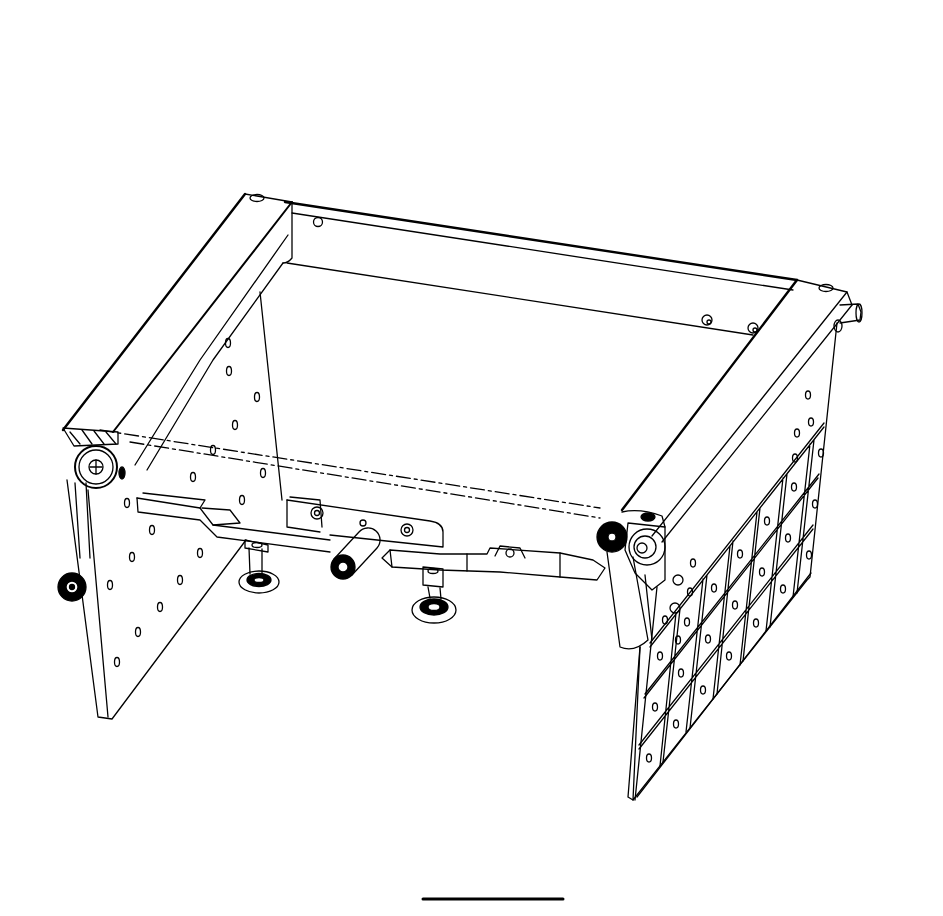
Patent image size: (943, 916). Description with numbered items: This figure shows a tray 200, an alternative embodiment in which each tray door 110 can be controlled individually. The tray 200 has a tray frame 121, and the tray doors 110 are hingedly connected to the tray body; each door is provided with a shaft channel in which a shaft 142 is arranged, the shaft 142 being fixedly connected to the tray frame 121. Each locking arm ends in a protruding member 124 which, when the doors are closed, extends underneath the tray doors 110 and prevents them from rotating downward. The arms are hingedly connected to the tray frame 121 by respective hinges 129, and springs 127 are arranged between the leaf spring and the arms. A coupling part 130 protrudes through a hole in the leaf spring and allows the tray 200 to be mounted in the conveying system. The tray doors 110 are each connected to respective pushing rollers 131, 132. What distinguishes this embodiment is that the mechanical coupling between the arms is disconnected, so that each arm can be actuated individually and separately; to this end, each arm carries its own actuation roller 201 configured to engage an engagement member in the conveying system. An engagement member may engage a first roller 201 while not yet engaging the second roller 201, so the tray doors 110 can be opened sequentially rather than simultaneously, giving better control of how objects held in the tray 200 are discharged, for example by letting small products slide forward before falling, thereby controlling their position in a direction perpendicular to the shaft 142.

The tray 200 is at (133, 152).
The tray frame 121 is at (457, 263).
The shaft 142 is at (90, 467).
The protruding member 124 is at (140, 495).
The hinge 129 is at (217, 508).
The spring 127 is at (405, 545).
The pushing roller 131 is at (603, 533).
The pushing roller 132 is at (65, 592).
The tray door 110 is at (137, 663).
The actuation roller 201 is at (257, 594).
The coupling part 130 is at (350, 571).